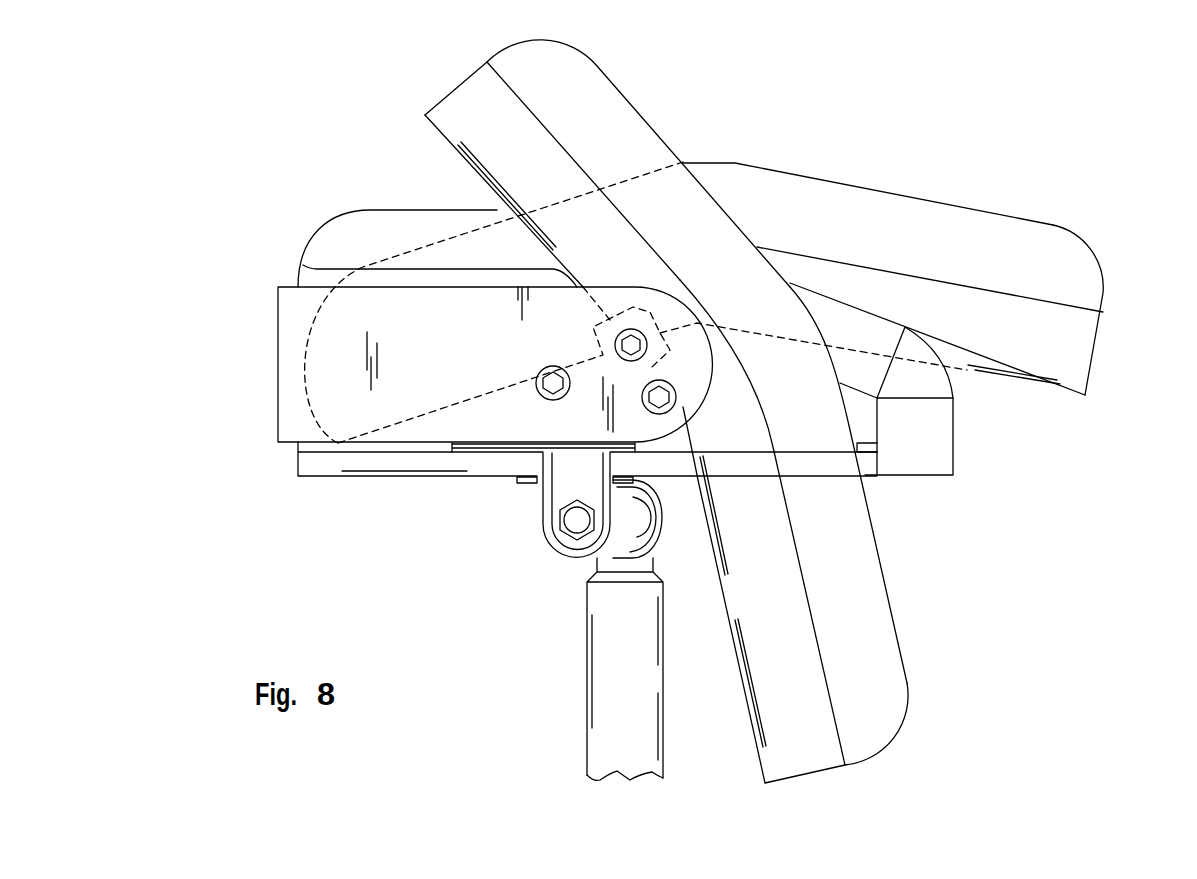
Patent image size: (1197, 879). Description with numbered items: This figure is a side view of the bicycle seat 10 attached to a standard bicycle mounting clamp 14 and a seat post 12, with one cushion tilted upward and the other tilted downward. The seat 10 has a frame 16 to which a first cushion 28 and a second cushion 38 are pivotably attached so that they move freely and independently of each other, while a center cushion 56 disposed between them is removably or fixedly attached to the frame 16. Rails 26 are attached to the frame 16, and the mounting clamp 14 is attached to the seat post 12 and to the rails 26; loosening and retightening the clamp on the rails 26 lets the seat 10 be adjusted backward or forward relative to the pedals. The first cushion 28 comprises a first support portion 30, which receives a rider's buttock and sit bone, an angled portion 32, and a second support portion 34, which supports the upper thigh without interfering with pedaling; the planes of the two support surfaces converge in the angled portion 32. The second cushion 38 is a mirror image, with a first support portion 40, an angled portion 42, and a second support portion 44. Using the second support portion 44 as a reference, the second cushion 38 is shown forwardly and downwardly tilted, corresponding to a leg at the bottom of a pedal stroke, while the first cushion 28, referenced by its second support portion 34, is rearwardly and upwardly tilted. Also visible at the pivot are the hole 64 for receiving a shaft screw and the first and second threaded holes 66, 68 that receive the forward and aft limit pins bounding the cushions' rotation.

The bicycle seat 10 is at (1043, 93).
The seat post 12 is at (586, 664).
The bicycle mounting clamp 14 is at (546, 547).
The frame 16 is at (268, 367).
The rails 26 is at (331, 480).
The first cushion 28 is at (1097, 239).
The first support portion 30 is at (418, 248).
The angled portion 32 is at (710, 163).
The second support portion 34 is at (907, 195).
The second cushion 38 is at (898, 631).
The first support portion 40 is at (622, 91).
The angled portion 42 is at (825, 327).
The second support portion 44 is at (880, 540).
The center cushion 56 is at (970, 445).
The hole 64 is at (633, 329).
The first threaded hole 66 is at (670, 410).
The second threaded hole 68 is at (538, 392).